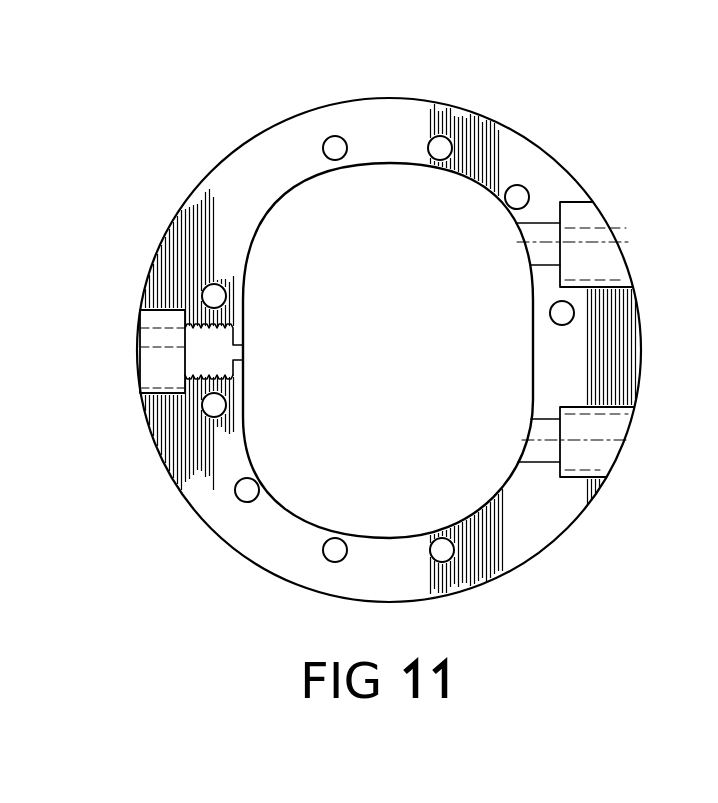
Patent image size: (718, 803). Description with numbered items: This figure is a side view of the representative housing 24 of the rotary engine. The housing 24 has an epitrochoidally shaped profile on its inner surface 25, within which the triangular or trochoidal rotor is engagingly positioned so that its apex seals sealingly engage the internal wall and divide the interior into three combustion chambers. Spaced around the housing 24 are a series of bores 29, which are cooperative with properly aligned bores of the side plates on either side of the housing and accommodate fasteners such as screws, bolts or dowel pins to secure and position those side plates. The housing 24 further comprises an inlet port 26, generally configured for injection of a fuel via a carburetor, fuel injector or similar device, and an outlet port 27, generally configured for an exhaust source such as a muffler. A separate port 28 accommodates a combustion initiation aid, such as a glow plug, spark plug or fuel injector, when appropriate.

The housing 24 is at (262, 570).
The inner surface 25 is at (285, 205).
The inlet port 26 is at (586, 476).
The outlet port 27 is at (577, 203).
The port 28 is at (163, 311).
The bores 29 is at (331, 137).